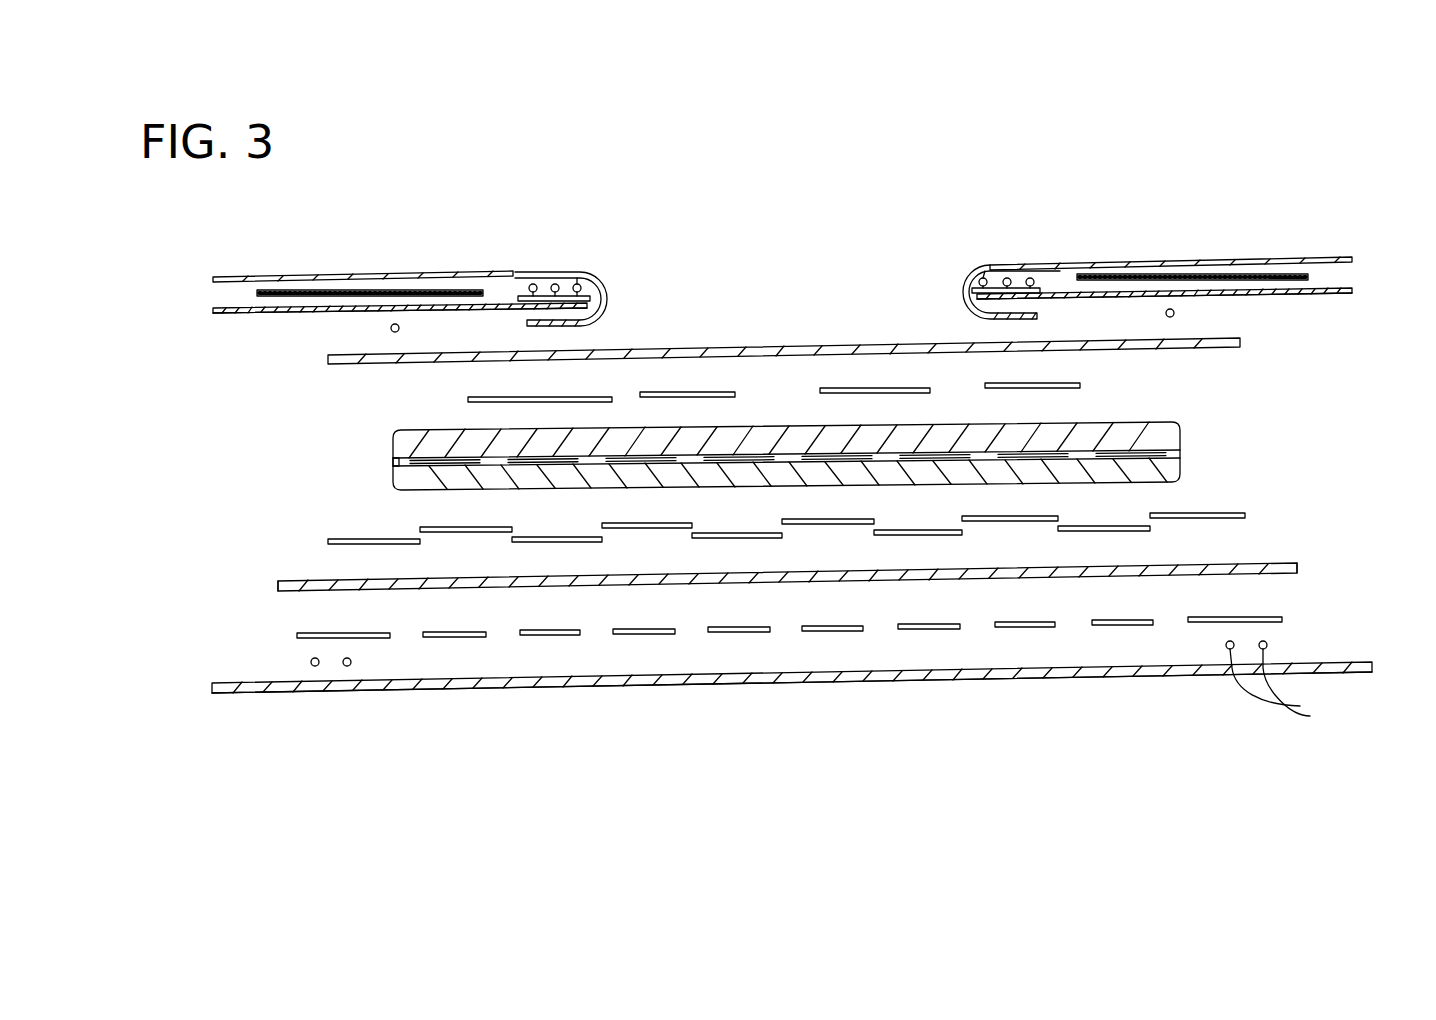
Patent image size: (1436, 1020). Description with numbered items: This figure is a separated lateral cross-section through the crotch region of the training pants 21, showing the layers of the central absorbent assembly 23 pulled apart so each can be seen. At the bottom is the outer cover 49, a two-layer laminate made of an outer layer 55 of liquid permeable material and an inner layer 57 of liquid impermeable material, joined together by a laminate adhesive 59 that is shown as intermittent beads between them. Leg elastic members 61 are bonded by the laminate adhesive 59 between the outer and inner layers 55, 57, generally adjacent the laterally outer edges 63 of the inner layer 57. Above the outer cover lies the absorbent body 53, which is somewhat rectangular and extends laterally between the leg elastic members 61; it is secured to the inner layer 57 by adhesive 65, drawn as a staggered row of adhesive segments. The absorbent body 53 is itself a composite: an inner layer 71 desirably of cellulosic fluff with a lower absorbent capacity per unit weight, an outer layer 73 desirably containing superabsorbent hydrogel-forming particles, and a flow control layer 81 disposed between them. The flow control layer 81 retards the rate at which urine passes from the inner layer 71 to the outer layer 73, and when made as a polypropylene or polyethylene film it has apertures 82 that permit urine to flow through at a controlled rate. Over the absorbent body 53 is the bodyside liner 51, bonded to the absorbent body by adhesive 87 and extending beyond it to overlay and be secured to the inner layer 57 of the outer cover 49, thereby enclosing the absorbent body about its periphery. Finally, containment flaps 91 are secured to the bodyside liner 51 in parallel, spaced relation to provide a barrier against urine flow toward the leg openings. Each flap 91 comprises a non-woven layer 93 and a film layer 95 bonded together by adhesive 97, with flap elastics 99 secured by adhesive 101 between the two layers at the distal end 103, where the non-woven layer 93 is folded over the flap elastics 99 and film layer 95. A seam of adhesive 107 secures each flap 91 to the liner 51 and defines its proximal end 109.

The training pants 21 is at (826, 246).
The central absorbent assembly 23 is at (480, 700).
The outer cover 49 is at (1045, 680).
The bodyside liner 51 is at (747, 352).
The absorbent body 53 is at (780, 454).
The outer layer 55 is at (752, 684).
The inner layer 57 is at (384, 592).
The laminate adhesive 59 is at (550, 640).
The leg elastic members 61 is at (345, 658).
The laterally outer edges 63 is at (278, 588).
The adhesive 65 is at (1210, 513).
The inner layer 71 is at (393, 428).
The outer layer 73 is at (393, 488).
The flow control layer 81 is at (393, 462).
The apertures 82 is at (535, 458).
The adhesive 87 is at (1080, 386).
The containment flaps 91 is at (205, 240).
The non-woven layer 93 is at (352, 276).
The film layer 95 is at (236, 316).
The adhesive 97 is at (285, 290).
The flap elastics 99 is at (533, 284).
The adhesive 101 is at (516, 296).
The distal end 103 is at (603, 310).
The seam of adhesive 107 is at (399, 329).
The proximal end 109 is at (313, 316).